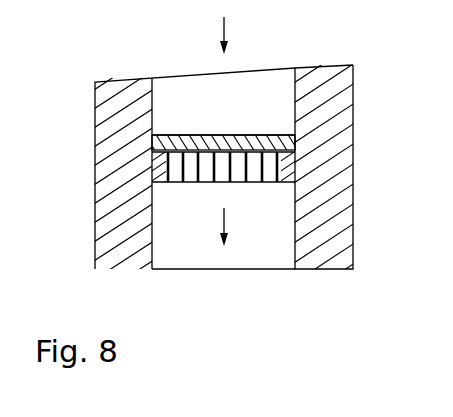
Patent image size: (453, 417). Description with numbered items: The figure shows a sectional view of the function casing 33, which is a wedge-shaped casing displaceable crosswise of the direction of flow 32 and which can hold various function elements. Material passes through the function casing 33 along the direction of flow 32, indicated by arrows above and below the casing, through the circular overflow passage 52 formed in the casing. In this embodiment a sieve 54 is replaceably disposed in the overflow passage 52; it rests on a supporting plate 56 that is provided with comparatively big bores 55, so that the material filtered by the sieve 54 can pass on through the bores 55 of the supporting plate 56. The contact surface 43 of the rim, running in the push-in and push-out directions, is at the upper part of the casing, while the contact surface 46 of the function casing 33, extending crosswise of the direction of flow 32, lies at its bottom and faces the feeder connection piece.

The direction of flow 32 is at (224, 33).
The function casing 33 is at (364, 83).
The contact surface of the rim 43 is at (130, 80).
The contact surface of the function casing 46 is at (318, 270).
The overflow passage 52 is at (163, 110).
The sieve 54 is at (283, 147).
The big bores 55 is at (273, 165).
The supporting plate 56 is at (163, 160).